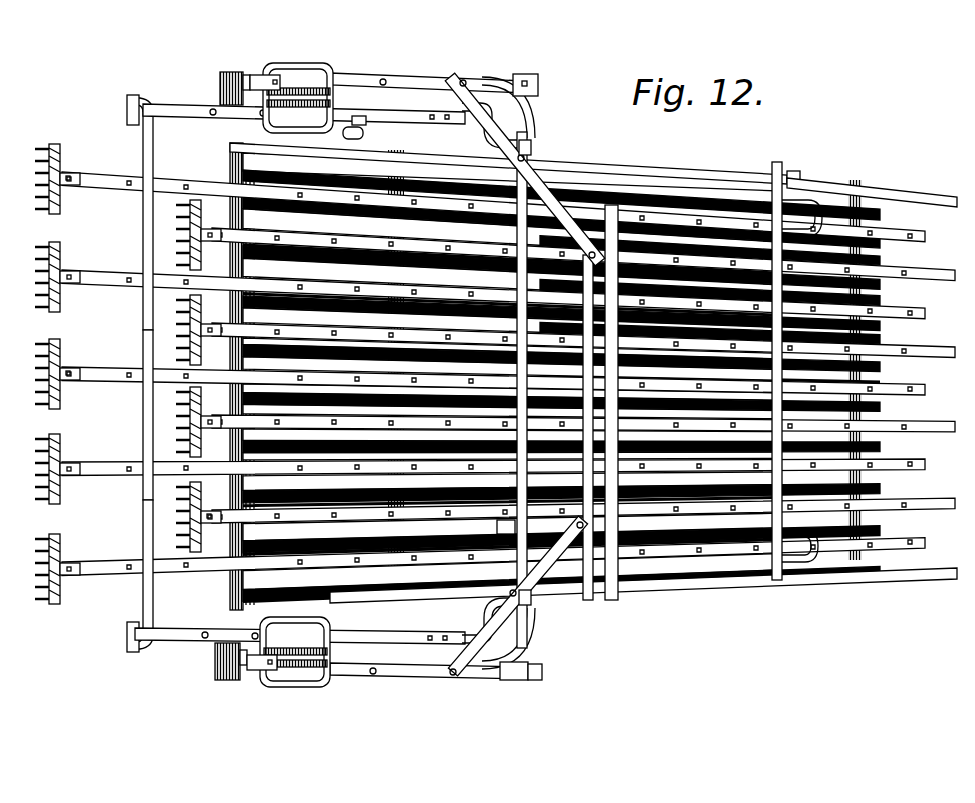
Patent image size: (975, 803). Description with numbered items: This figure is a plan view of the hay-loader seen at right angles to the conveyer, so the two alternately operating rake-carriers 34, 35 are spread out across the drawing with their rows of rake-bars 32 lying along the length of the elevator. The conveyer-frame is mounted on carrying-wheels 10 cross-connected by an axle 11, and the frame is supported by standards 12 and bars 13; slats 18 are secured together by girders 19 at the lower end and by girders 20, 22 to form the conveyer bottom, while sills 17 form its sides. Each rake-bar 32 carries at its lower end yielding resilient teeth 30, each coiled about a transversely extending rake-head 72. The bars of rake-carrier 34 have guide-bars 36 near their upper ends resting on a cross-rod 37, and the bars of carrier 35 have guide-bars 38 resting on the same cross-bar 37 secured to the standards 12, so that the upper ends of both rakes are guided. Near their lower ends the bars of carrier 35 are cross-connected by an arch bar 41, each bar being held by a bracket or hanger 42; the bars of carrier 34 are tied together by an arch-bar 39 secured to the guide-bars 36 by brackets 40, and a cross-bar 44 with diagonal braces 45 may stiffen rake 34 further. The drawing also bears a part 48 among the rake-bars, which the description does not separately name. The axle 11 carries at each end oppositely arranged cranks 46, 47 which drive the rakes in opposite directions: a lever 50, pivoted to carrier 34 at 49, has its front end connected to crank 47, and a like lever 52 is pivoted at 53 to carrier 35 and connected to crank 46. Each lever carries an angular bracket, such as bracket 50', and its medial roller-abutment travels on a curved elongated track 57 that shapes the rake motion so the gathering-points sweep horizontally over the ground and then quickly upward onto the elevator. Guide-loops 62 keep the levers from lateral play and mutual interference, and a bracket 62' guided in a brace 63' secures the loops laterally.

The carrying-wheels 10 is at (428, 585).
The axle 11 is at (480, 232).
The standards 12 is at (590, 172).
The bars 13 is at (425, 640).
The sills 17 is at (615, 595).
The slats 18 is at (880, 240).
The girders 19 is at (230, 590).
The girders 20 is at (372, 588).
The girders 22 is at (870, 333).
The resilient teeth 30 is at (185, 510).
The rake-bars 32 is at (335, 518).
The rake-carrier 34 is at (504, 527).
The rake-carrier 35 is at (148, 305).
The guide-bar 36 is at (700, 560).
The cross-rod 37 is at (782, 335).
The guide-bar 38 is at (715, 420).
The arch-bar 39 is at (527, 630).
The brackets 40 is at (565, 330).
The arch bar 41 is at (143, 603).
The bracket or hanger 42 is at (143, 395).
The cross-bar 44 is at (590, 370).
The diagonal braces 45 is at (530, 600).
The crank 46 is at (448, 670).
The crank 47 is at (528, 690).
The strip 48 is at (440, 420).
The pivot 49 is at (255, 680).
The lever 50 is at (340, 396).
The angular bracket 50' is at (554, 668).
The lever 52 is at (185, 633).
The pivotal connection 53 is at (133, 650).
The curved elongated track 57 is at (218, 665).
The guide-loop 62 is at (296, 358).
The bracket 62' is at (347, 151).
The brace 63' is at (379, 107).
The rake-head 72 is at (210, 525).